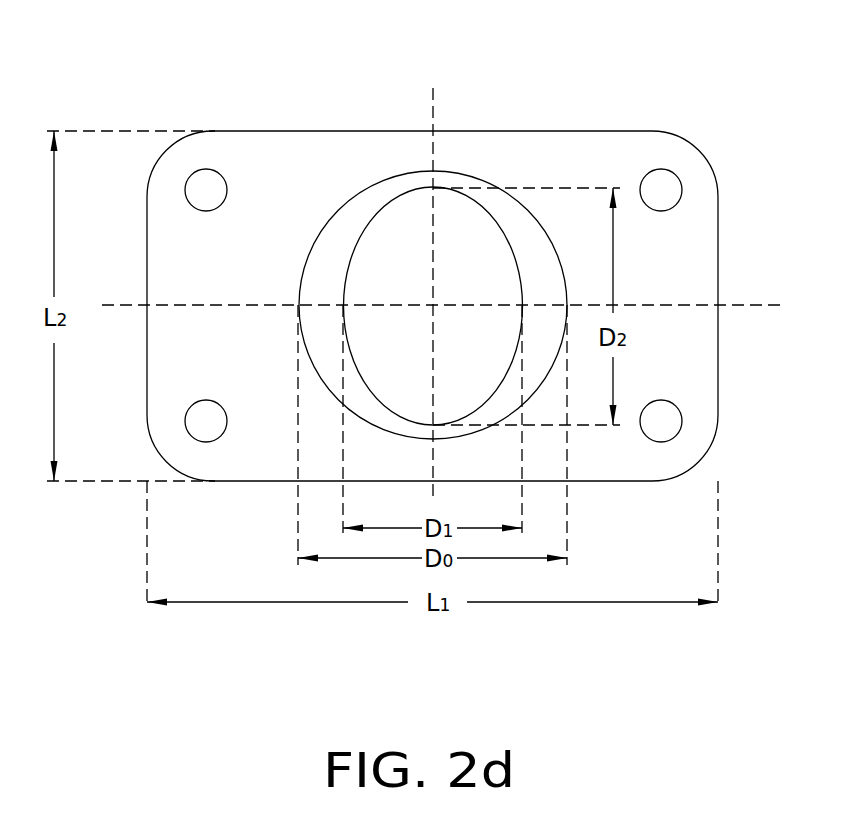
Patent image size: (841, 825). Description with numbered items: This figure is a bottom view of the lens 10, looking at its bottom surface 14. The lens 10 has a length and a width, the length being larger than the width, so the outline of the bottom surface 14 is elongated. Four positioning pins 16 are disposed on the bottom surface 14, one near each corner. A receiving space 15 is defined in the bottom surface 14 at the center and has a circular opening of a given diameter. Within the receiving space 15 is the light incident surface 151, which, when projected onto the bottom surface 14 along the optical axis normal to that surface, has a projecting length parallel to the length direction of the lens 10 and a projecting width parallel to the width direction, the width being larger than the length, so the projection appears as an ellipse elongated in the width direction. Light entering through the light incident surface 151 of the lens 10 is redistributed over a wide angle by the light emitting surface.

The lens 10 is at (238, 68).
The bottom surface 14 is at (700, 217).
The receiving space 15 is at (348, 223).
The light incident surface 151 is at (402, 223).
The positioning pins 16 is at (661, 185).